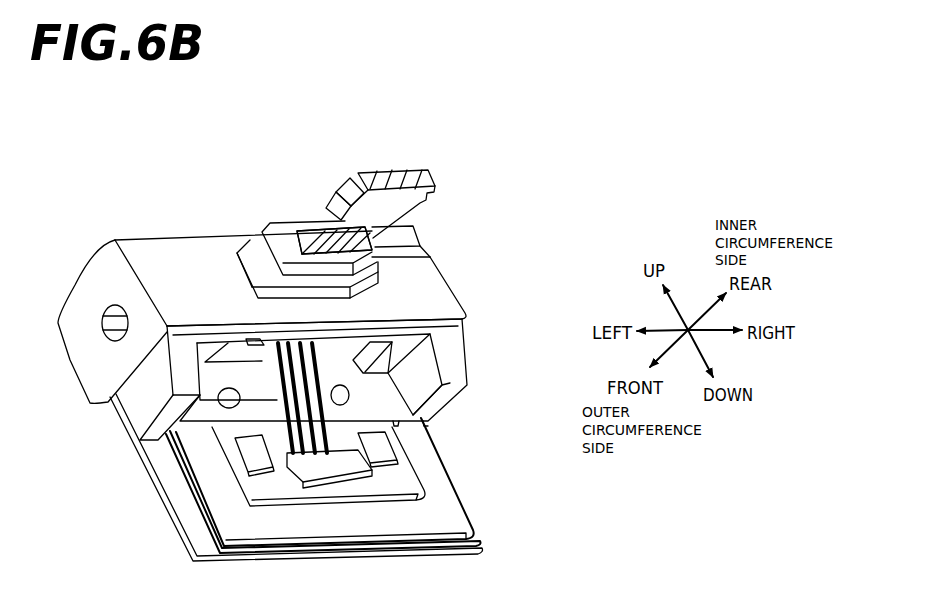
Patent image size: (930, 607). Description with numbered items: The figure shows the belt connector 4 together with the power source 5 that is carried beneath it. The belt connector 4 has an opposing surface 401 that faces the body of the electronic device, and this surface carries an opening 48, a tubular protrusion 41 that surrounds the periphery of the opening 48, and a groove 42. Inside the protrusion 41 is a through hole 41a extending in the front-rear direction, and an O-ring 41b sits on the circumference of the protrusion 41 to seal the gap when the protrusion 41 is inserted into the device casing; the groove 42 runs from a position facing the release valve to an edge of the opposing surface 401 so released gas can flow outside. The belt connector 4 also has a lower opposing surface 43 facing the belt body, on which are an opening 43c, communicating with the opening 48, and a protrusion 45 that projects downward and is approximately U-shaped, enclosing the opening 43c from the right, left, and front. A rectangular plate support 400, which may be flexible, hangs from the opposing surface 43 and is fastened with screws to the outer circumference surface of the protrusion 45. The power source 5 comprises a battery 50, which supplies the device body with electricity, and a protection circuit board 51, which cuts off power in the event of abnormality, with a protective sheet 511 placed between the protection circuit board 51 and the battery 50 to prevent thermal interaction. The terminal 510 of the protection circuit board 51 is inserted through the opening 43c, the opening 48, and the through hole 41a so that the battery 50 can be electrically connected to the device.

The belt connector 4 is at (182, 172).
The protrusion 41 is at (290, 140).
The through hole 41a is at (302, 237).
The opening 48 is at (334, 240).
The O-ring 41b is at (256, 232).
The groove 42 is at (417, 253).
The opposing surface 43 is at (463, 325).
The opening 43c is at (255, 343).
The protrusion 45 is at (467, 392).
The opposing surface 401 is at (150, 270).
The support 400 is at (147, 475).
The terminal 510 is at (427, 175).
The power source 5 is at (548, 470).
The battery 50 is at (462, 545).
The protection circuit board 51 is at (420, 470).
The protective sheet 511 is at (458, 510).